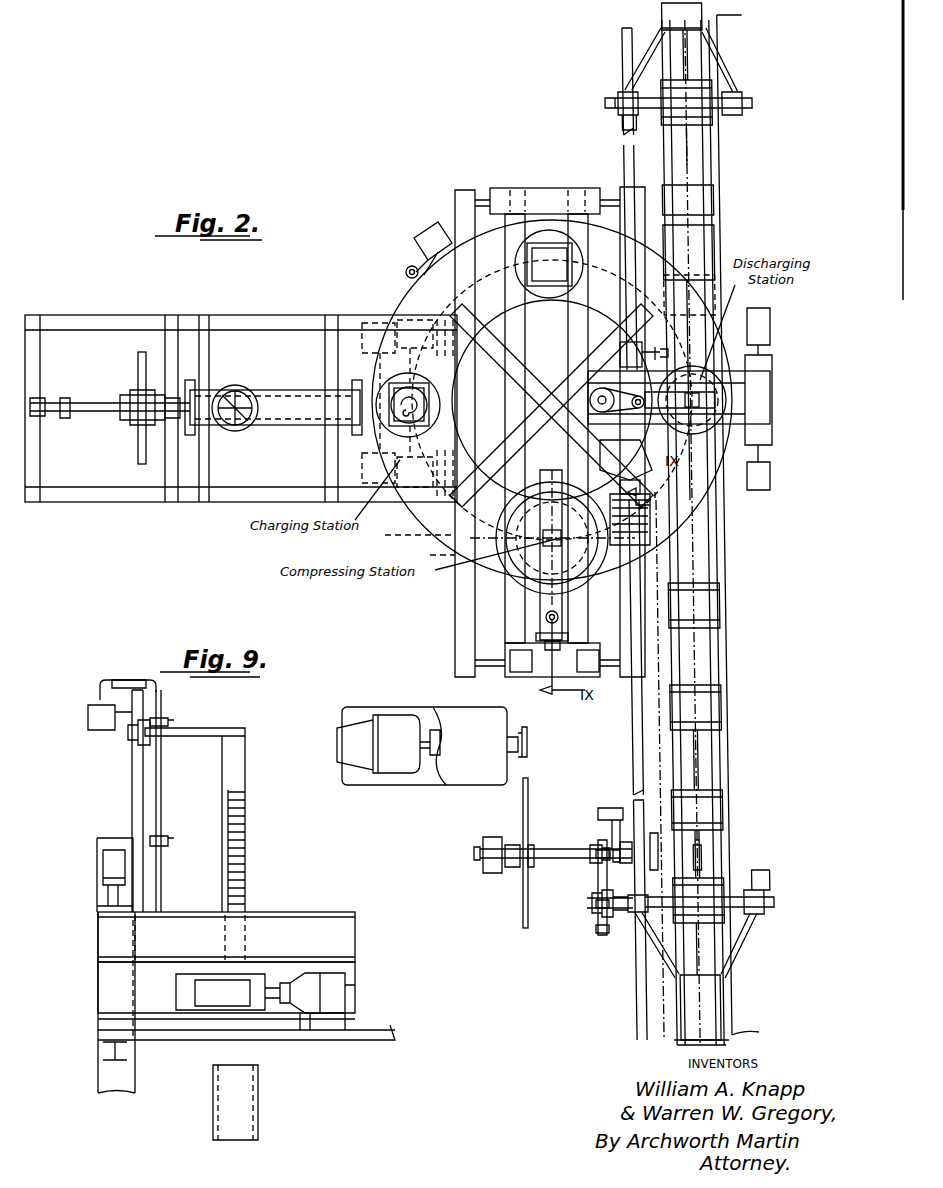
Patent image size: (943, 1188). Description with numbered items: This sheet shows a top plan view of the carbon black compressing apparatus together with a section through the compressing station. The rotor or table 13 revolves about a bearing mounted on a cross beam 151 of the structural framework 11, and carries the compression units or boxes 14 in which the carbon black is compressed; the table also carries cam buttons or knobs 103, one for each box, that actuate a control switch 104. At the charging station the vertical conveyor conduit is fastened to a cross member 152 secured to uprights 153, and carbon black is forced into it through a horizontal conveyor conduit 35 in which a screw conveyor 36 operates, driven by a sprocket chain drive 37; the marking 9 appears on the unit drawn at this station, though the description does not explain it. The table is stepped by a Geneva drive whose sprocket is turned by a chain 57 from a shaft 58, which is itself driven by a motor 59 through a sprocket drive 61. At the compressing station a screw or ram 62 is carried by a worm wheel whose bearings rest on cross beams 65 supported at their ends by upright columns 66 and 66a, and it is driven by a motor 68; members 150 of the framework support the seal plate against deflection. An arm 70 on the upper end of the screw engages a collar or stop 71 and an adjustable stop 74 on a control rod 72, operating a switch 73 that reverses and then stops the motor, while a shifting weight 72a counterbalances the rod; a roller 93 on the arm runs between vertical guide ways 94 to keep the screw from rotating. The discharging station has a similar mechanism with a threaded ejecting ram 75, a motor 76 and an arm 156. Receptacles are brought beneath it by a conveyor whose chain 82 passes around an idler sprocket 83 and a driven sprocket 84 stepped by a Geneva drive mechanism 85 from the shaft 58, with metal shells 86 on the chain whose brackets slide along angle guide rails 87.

In FIG. 2, the container at charging station 9 is at (408, 405).
In FIG. 2, the framework 11 is at (457, 598).
In FIG. 2, the rotor or table 13 is at (410, 300).
In FIG. 2, the compression units or boxes 14 is at (572, 262).
In FIG. 9, the compression units or boxes 14 is at (254, 1096).
In FIG. 2, the horizontal conveyor conduit 35 is at (285, 392).
In FIG. 2, the screw conveyor 36 is at (240, 392).
In FIG. 2, the sprocket chain drive 37 is at (136, 368).
In FIG. 2, the chain 57 is at (623, 762).
In FIG. 2, the shaft 58 is at (550, 850).
In FIG. 2, the motor 59 is at (395, 770).
In FIG. 2, the sprocket drive 61 is at (528, 780).
In FIG. 9, the screw or ram 62 is at (240, 768).
In FIG. 2, the cross beams 65 is at (508, 618).
In FIG. 9, the cross beams 65 is at (246, 963).
In FIG. 2, the upright column 66 is at (492, 668).
In FIG. 9, the upright column 66 is at (108, 988).
In FIG. 2, the upright column 66a is at (492, 188).
In FIG. 2, the motor 68 is at (600, 462).
In FIG. 9, the motor 68 is at (325, 978).
In FIG. 2, the arm 70 is at (540, 602).
In FIG. 9, the arm 70 is at (208, 730).
In FIG. 9, the collar or stop 71 is at (160, 840).
In FIG. 2, the control rod 72 is at (558, 614).
In FIG. 9, the control rod 72 is at (161, 784).
In FIG. 9, the shifting weight 72a is at (143, 685).
In FIG. 9, the switch 73 is at (100, 730).
In FIG. 2, the adjustable stop 74 is at (545, 622).
In FIG. 9, the adjustable stop 74 is at (166, 722).
In FIG. 2, the threaded ejecting ram 75 is at (692, 388).
In FIG. 2, the motor 76 is at (644, 346).
In FIG. 2, the chain 82 is at (700, 790).
In FIG. 2, the idler sprocket 83 is at (688, 165).
In FIG. 2, the driven sprocket 84 is at (700, 852).
In FIG. 2, the Geneva drive mechanism 85 is at (622, 812).
In FIG. 2, the metal shells 86 is at (696, 115).
In FIG. 2, the angle guide rails 87 is at (710, 150).
In FIG. 2, the roller 93 is at (570, 634).
In FIG. 9, the roller 93 is at (132, 748).
In FIG. 9, the vertical guide ways 94 is at (132, 788).
In FIG. 2, the cam buttons or knobs 103 is at (405, 272).
In FIG. 2, the control switch 104 is at (420, 240).
In FIG. 2, the members of the structural framework 150 is at (530, 540).
In FIG. 2, the cross beam 151 is at (585, 328).
In FIG. 2, the cross member 152 is at (483, 417).
In FIG. 2, the uprights 153 is at (410, 320).
In FIG. 2, the arm 156 is at (658, 492).